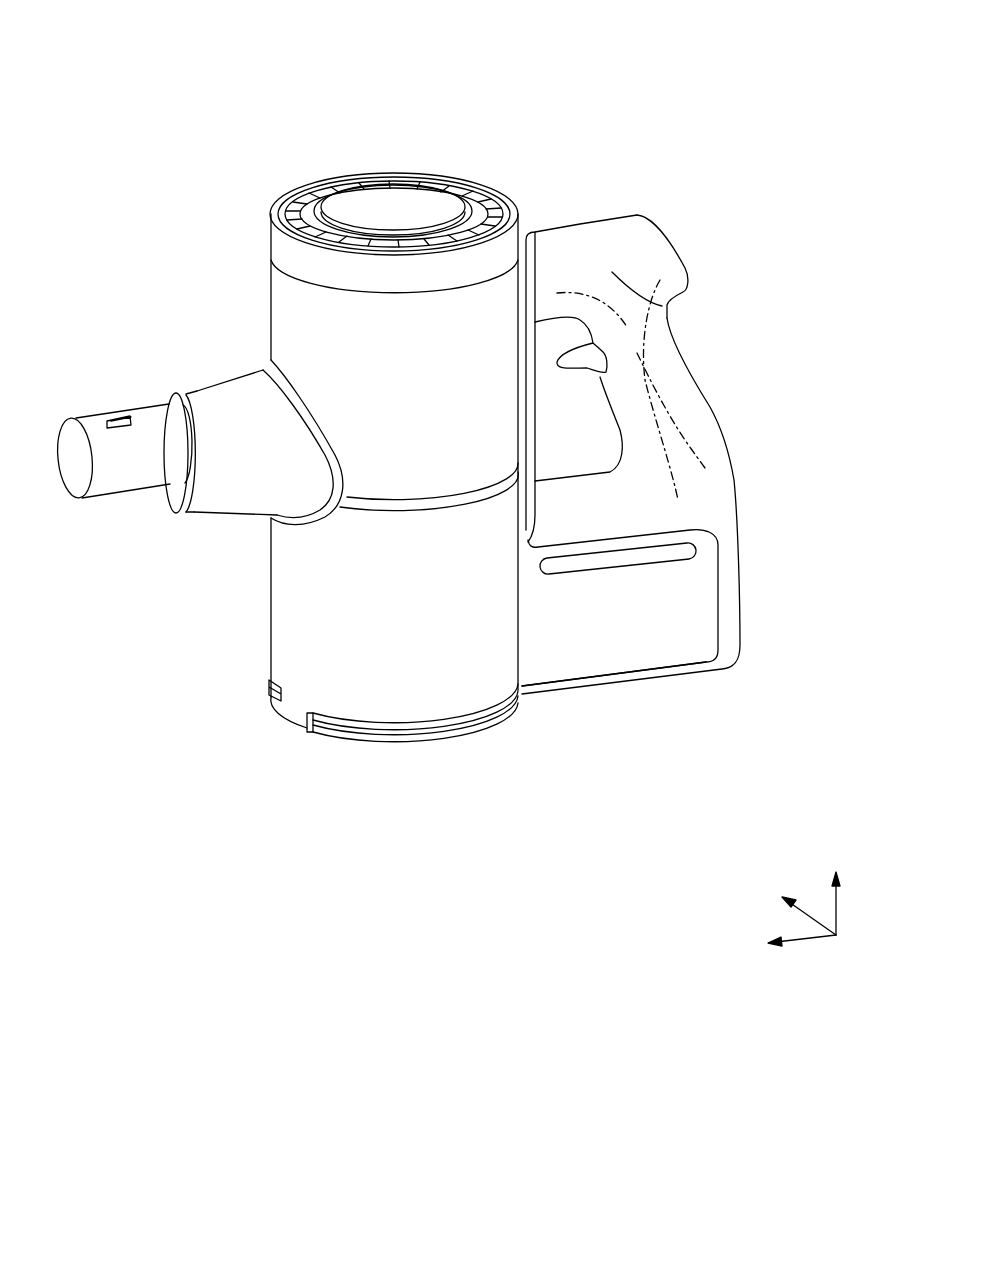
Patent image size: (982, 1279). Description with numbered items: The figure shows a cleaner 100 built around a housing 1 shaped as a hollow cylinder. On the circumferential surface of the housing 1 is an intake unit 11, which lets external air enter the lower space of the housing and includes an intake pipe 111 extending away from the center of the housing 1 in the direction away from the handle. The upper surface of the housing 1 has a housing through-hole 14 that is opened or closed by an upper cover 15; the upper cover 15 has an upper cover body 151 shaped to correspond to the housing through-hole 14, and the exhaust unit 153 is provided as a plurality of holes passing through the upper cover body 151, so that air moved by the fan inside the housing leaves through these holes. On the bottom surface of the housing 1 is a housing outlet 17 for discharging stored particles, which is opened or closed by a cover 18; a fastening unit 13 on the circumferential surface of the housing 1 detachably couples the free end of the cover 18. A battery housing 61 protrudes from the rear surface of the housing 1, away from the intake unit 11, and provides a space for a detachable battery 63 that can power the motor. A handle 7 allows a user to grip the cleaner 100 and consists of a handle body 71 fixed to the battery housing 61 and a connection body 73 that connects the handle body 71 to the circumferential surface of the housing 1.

The cleaner 100 is at (54, 47).
The housing 1 is at (300, 608).
The intake unit 11 is at (226, 394).
The intake pipe 111 is at (133, 468).
The fastening unit 13 is at (268, 685).
The housing through-hole 14 is at (275, 269).
The upper cover 15 is at (247, 83).
The upper cover body 151 is at (382, 198).
The exhaust unit 153 is at (320, 185).
The housing outlet 17 is at (395, 727).
The cover 18 is at (463, 740).
The handle 7 is at (818, 302).
The handle body 71 is at (695, 417).
The connection body 73 is at (662, 306).
The battery housing 61 is at (702, 593).
The battery 63 is at (637, 676).